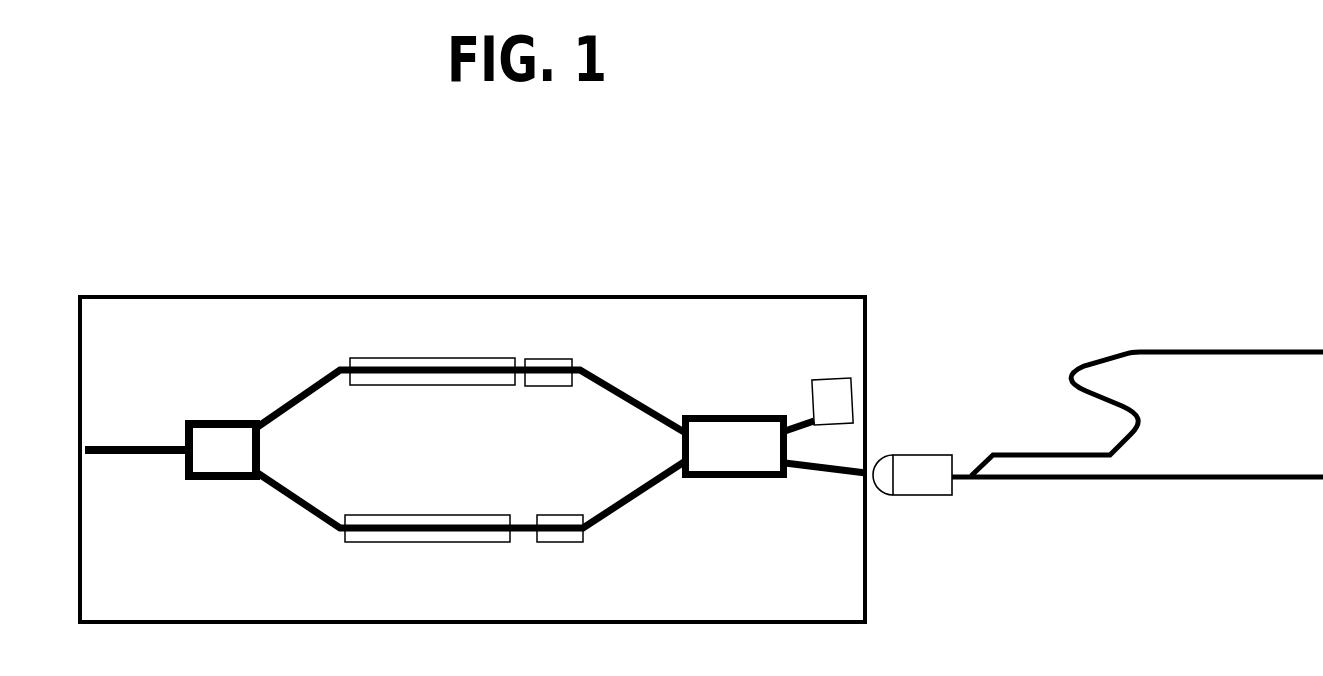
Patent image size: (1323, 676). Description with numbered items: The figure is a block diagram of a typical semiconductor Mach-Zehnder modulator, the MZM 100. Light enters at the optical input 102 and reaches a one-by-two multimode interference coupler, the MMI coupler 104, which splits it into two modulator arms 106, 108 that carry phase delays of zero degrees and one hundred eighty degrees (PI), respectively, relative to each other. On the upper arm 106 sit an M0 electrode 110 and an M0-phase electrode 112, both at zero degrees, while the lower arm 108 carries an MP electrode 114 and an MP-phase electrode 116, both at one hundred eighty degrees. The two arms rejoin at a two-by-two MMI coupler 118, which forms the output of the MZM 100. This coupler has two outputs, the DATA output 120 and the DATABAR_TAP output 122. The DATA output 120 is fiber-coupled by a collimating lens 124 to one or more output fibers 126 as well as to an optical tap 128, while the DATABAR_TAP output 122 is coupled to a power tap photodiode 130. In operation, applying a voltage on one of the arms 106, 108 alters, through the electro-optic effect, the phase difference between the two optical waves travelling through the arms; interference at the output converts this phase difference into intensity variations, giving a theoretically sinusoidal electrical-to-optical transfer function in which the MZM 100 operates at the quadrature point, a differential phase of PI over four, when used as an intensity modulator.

The semiconductor MZM 100 is at (784, 240).
The optical input 102 is at (110, 446).
The 1×2 multimode interference (MMI) coupler 104 is at (222, 450).
The modulator arm 106 is at (277, 406).
The modulator arm 108 is at (295, 503).
The M0 (0°) electrode 110 is at (402, 354).
The M0-phase (0°) electrode 112 is at (548, 356).
The MP (180°) electrode 114 is at (393, 542).
The MP-phase (180°) electrode 116 is at (563, 542).
The 2×2 MMI coupler 118 is at (735, 447).
The DATA output 120 is at (817, 471).
The DATABAR_TAP output 122 is at (802, 420).
The collimating lens 124 is at (912, 497).
The output fiber 126 is at (1189, 481).
The optical tap 128 is at (1236, 360).
The power tap photodiode 130 is at (853, 401).